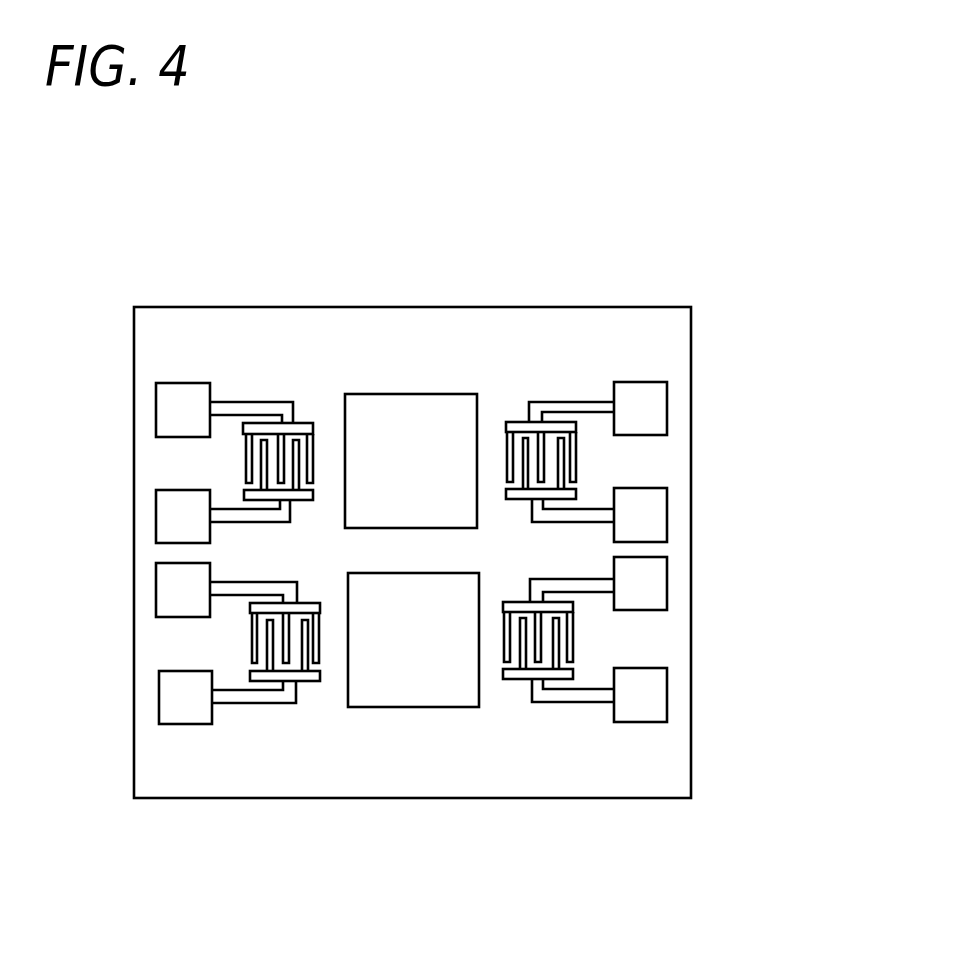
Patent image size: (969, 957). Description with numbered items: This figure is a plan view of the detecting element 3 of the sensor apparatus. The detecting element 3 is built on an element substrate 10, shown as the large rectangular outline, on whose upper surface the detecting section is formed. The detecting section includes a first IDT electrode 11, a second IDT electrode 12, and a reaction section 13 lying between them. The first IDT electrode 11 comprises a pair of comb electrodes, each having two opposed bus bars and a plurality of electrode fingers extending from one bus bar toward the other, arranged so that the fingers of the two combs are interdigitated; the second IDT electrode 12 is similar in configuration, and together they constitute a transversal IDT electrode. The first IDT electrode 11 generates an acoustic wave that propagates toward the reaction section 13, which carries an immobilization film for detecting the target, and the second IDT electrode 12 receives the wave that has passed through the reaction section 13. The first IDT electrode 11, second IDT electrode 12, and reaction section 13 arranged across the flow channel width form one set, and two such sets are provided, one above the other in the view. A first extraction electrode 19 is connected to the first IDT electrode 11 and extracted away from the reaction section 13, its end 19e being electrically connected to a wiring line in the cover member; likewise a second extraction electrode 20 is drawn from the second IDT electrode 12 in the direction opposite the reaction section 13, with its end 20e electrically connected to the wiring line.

The detecting element 3 is at (601, 185).
The element substrate 10 is at (703, 381).
The first IDT electrode 11 is at (517, 422).
The second IDT electrode 12 is at (310, 423).
The reaction section 13 is at (417, 409).
The first extraction electrode 19 is at (572, 403).
The end of the first extraction electrode 19e is at (658, 512).
The second extraction electrode 20 is at (248, 402).
The end of the second extraction electrode 20e is at (168, 513).